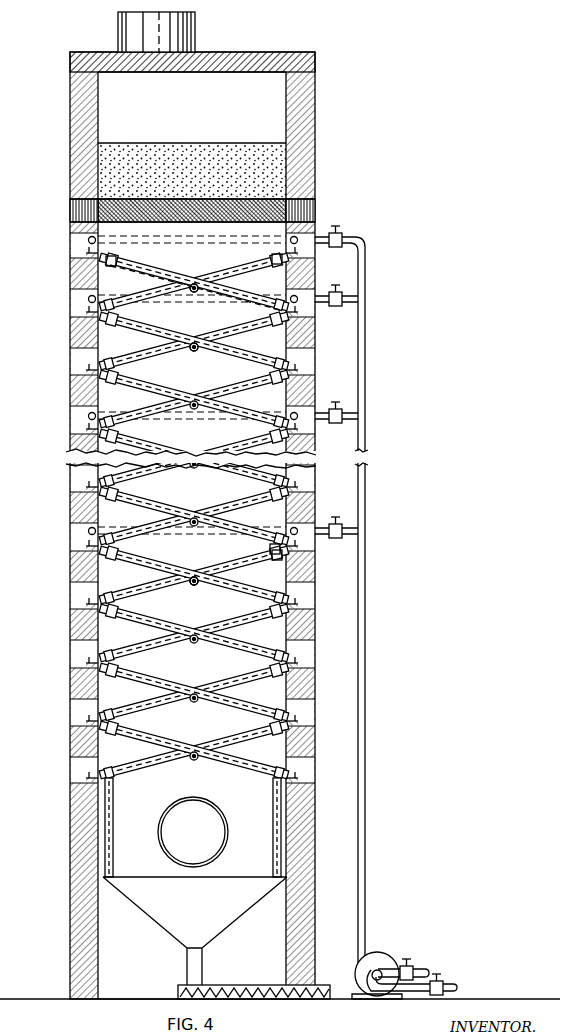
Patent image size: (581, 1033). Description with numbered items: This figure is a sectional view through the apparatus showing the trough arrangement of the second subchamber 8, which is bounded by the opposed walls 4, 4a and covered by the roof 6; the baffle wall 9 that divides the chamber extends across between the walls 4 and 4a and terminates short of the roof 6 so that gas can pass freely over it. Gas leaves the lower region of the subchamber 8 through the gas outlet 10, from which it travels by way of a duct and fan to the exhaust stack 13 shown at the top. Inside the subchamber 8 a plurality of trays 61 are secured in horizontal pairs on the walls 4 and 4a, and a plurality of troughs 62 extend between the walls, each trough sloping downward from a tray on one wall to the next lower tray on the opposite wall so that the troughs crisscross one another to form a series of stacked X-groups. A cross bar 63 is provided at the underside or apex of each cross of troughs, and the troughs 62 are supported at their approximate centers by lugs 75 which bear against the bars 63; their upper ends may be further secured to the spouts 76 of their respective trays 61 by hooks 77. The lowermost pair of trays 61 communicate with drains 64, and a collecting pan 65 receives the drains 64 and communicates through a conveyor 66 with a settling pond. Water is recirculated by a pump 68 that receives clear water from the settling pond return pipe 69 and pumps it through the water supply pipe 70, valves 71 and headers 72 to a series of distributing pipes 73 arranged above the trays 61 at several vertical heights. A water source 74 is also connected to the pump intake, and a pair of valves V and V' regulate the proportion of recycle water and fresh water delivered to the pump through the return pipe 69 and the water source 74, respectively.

The wall 4 is at (308, 100).
The wall 4a is at (78, 97).
The roof 6 is at (240, 51).
The subchamber 8 is at (194, 513).
The baffle wall 9 is at (253, 150).
The gas outlet 10 is at (222, 815).
The exhaust stack 13 is at (118, 23).
The trays 61 is at (85, 262).
The troughs 62 is at (133, 269).
The cross bar 63 is at (192, 295).
The drains 64 is at (114, 790).
The collecting pan 65 is at (138, 913).
The conveyor 66 is at (230, 985).
The pump 68 is at (380, 952).
The settling pond return pipe 69 is at (452, 985).
The water supply pipe 70 is at (367, 866).
The valves 71 is at (336, 226).
The headers 72 is at (229, 296).
The distributing pipes 73 is at (299, 243).
The water source 74 is at (420, 968).
The lugs 75 is at (199, 349).
The spouts 76 is at (273, 258).
The hooks 77 is at (118, 259).
The valve V is at (440, 969).
The valve V' is at (404, 952).